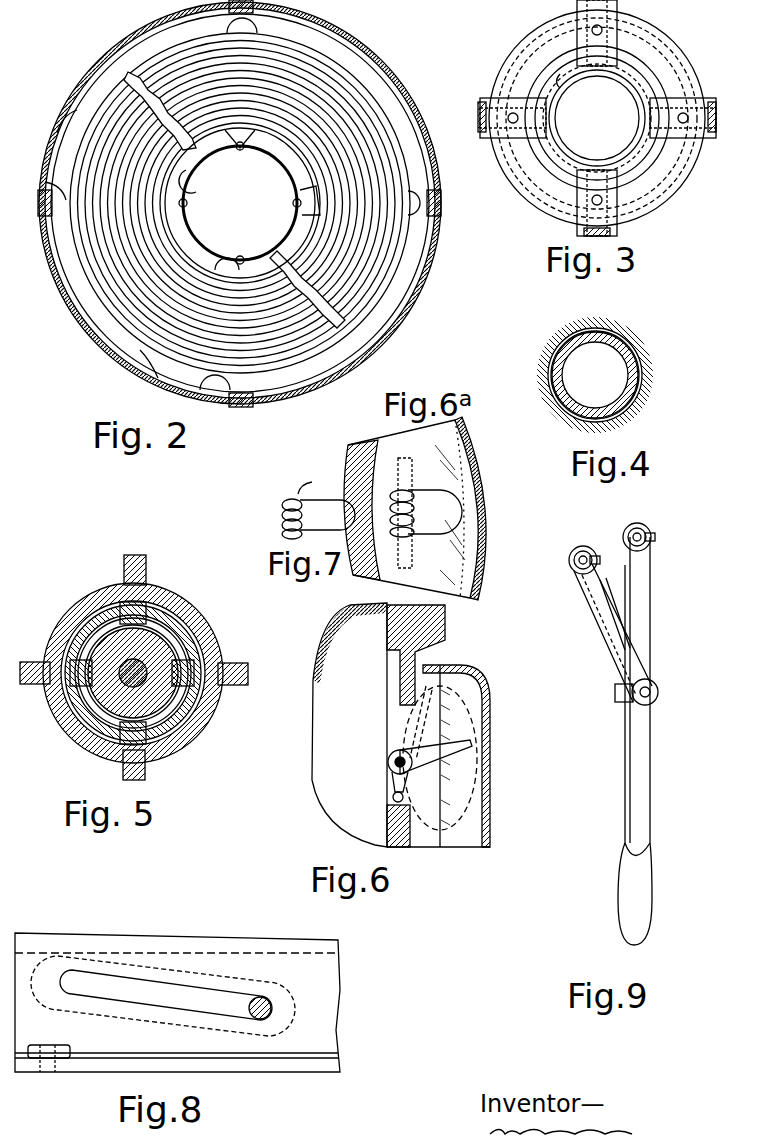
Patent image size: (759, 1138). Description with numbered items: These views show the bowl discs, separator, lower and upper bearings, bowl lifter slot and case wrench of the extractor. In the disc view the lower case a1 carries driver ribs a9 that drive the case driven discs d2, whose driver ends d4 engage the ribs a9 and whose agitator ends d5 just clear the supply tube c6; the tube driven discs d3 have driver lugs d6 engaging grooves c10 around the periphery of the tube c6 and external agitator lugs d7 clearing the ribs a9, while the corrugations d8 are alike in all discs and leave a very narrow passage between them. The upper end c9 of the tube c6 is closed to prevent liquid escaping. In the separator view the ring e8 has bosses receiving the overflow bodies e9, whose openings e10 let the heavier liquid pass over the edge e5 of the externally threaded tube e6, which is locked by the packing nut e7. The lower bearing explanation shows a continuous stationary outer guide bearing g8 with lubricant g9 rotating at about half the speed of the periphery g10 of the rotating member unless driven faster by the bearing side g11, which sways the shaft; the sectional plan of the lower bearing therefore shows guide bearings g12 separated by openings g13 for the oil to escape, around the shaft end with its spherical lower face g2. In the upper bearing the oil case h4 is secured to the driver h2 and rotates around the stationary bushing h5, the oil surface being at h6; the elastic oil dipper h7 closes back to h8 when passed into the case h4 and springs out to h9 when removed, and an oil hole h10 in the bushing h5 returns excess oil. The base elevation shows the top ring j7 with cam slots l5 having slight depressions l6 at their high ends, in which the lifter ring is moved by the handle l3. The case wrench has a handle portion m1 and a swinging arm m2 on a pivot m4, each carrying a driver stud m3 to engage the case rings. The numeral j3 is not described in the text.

In FIG. 2, the lower portion or case of the extractor bowl a1 is at (390, 334).
In FIG. 2, the driver ribs a9 is at (245, 398).
In FIG. 2, the case driven discs d2 is at (130, 325).
In FIG. 2, the tube driven discs d3 is at (305, 165).
In FIG. 2, the driver ends d4 is at (72, 130).
In FIG. 2, the agitator ends d5 is at (192, 182).
In FIG. 2, the driver lugs d6 is at (305, 212).
In FIG. 2, the external agitator lugs d7 is at (412, 225).
In FIG. 2, the corrugations d8 is at (370, 280).
In FIG. 2, the supply tube c6 is at (198, 242).
In FIG. 2, the grooves c10 is at (242, 258).
In FIG. 3, the grooves c10 is at (560, 82).
In FIG. 3, the upper end of the tube c9 is at (587, 78).
In FIG. 3, the edge of externally threaded tube e5 is at (587, 178).
In FIG. 3, the externally threaded tube e6 is at (582, 230).
In FIG. 3, the packing nut e7 is at (612, 228).
In FIG. 3, the ring e8 is at (560, 172).
In FIG. 3, the overflow bodies e9 is at (616, 190).
In FIG. 3, the openings e10 is at (580, 200).
In FIG. 5, the lower face g2 is at (170, 640).
In FIG. 4, the stationary outer guide bearing g8 is at (640, 400).
In FIG. 4, the lubricant g9 is at (643, 378).
In FIG. 4, the periphery of the rotating member g10 is at (640, 342).
In FIG. 4, the bearing side of the rotatable member g11 is at (568, 345).
In FIG. 5, the guide bearings g12 is at (165, 735).
In FIG. 5, the openings g13 is at (175, 700).
In FIG. 6, the driver h2 is at (352, 630).
In FIG. 6A, the oil case h4 is at (488, 555).
In FIG. 6, the oil case h4 is at (492, 792).
In FIG. 6A, the bushing h5 is at (378, 525).
In FIG. 6, the bushing h5 is at (442, 664).
In FIG. 6A, the oil surface h6 is at (412, 578).
In FIG. 6, the oil surface h6 is at (438, 838).
In FIG. 7, the oil dipper h7 is at (318, 498).
In FIG. 6A, the oil dipper h7 is at (428, 498).
In FIG. 6, the oil dipper h7 is at (413, 765).
In FIG. 6, the closed position of oil dipper h8 is at (414, 702).
In FIG. 6, the removed position of oil dipper h9 is at (420, 826).
In FIG. 6, the oil hole h10 is at (420, 622).
In FIG. 9, the handle portion m1 is at (652, 786).
In FIG. 9, the swinging arm m2 is at (592, 616).
In FIG. 9, the driver stud m3 is at (657, 540).
In FIG. 9, the pivot m4 is at (660, 692).
In FIG. 8, the plate flange j3 is at (288, 1070).
In FIG. 8, the top ring of base j7 is at (330, 1005).
In FIG. 8, the handle l3 is at (245, 998).
In FIG. 8, the cam slots l5 is at (146, 1008).
In FIG. 8, the slight depressions l6 is at (75, 985).